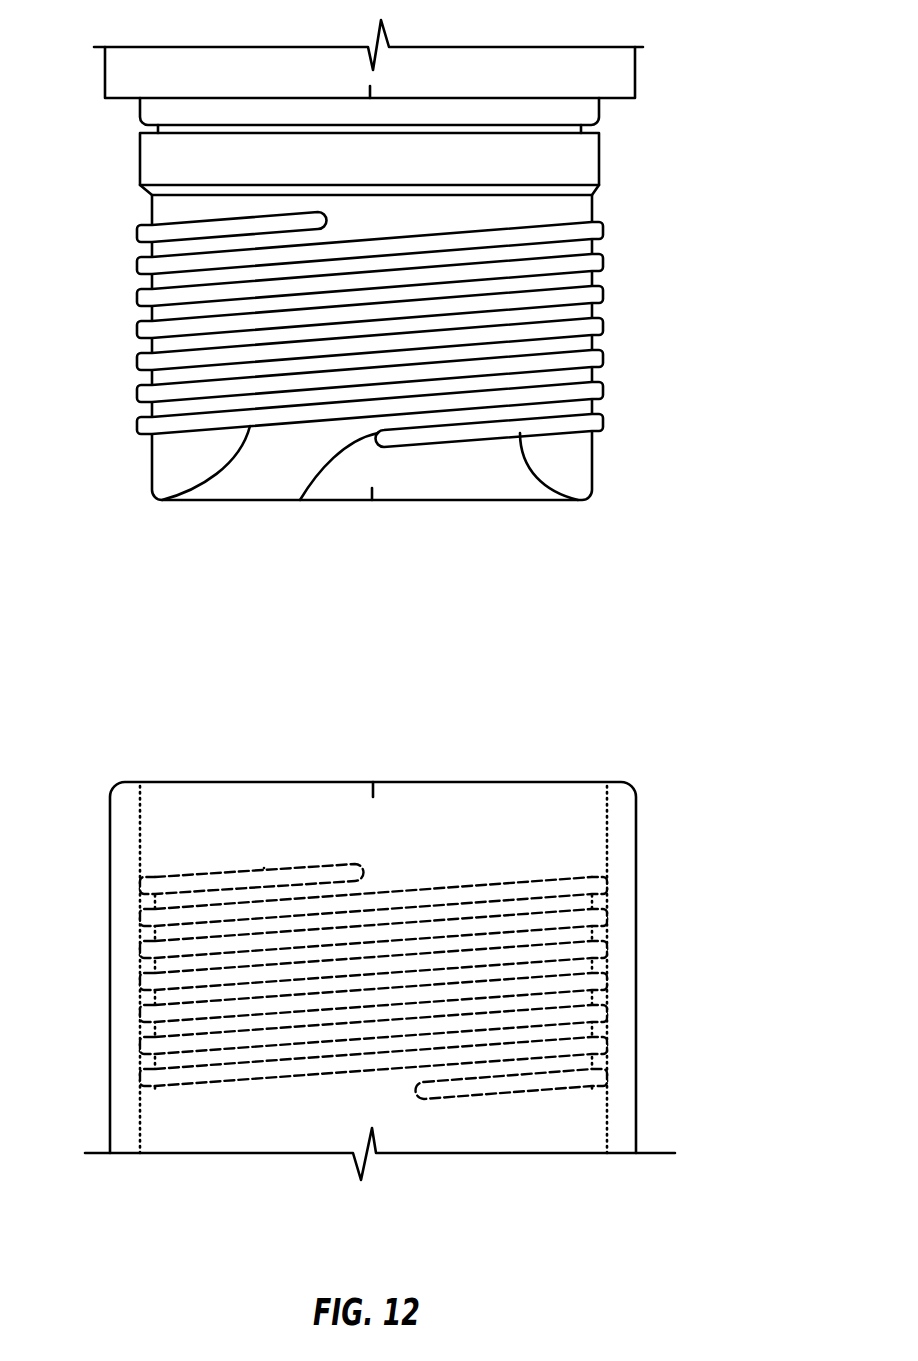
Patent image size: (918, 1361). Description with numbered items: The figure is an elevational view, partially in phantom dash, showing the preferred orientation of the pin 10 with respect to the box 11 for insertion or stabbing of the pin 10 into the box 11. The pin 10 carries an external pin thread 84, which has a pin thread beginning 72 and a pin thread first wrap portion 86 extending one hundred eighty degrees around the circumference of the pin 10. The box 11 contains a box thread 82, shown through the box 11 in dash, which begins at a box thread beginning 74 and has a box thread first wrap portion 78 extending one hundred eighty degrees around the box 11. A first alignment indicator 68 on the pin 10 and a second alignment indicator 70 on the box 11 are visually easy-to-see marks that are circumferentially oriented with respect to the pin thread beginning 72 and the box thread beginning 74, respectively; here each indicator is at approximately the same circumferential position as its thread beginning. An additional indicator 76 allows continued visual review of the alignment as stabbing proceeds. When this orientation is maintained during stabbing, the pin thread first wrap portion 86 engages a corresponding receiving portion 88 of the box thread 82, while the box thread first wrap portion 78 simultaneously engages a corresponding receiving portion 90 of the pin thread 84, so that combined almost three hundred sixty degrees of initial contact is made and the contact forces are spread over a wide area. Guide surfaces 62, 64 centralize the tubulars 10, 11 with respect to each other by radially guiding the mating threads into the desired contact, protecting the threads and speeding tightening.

The pin 10 is at (635, 70).
The box 11 is at (636, 970).
The guide surface 62 is at (592, 450).
The guide surface 64 is at (607, 805).
The alignment indicator 68 is at (372, 490).
The alignment indicator 70 is at (373, 790).
The pin thread beginning 72 is at (300, 500).
The box thread beginning 74 is at (365, 867).
The additional indicator 76 is at (370, 87).
The box thread first wrap portion 78 is at (264, 868).
The box thread 82 is at (140, 997).
The pin thread 84 is at (603, 330).
The pin thread first wrap portion 86 is at (576, 500).
The receiving portion 88 is at (535, 880).
The receiving portion 90 is at (160, 497).